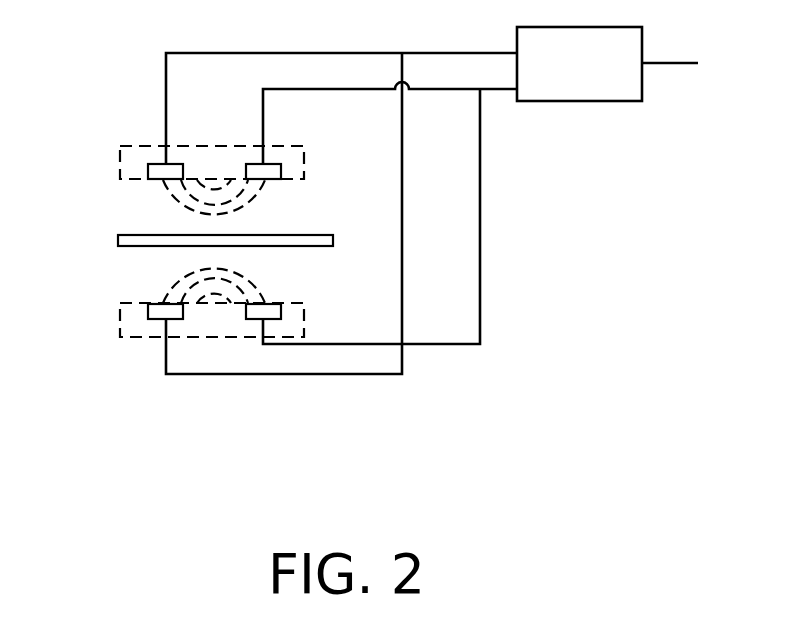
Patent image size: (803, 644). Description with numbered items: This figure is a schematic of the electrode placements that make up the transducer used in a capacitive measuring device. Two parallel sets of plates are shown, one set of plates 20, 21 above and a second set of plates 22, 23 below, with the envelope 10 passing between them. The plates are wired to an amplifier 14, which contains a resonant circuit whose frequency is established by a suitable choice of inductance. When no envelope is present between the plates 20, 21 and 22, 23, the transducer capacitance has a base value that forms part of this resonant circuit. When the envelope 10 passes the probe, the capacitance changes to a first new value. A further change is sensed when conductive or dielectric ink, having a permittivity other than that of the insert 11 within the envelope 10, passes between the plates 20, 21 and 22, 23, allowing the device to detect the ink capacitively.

The envelope 10 is at (118, 240).
The insert 11 is at (320, 235).
The amplifier 14 is at (596, 73).
The plate 20 is at (175, 164).
The plate 21 is at (272, 164).
The plate 22 is at (183, 311).
The plate 23 is at (281, 315).